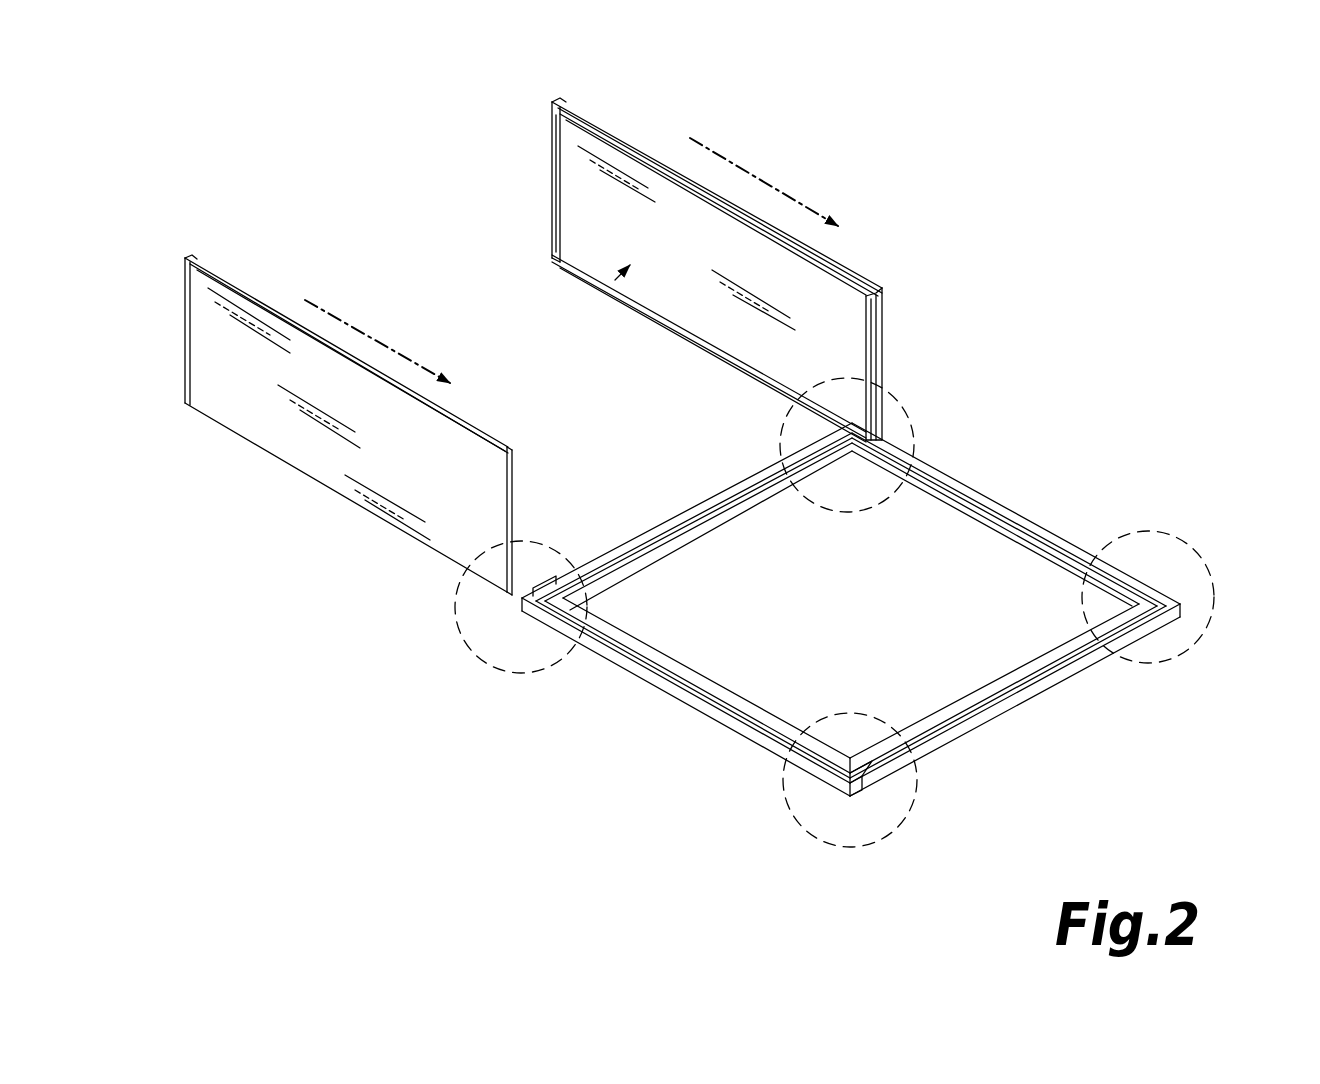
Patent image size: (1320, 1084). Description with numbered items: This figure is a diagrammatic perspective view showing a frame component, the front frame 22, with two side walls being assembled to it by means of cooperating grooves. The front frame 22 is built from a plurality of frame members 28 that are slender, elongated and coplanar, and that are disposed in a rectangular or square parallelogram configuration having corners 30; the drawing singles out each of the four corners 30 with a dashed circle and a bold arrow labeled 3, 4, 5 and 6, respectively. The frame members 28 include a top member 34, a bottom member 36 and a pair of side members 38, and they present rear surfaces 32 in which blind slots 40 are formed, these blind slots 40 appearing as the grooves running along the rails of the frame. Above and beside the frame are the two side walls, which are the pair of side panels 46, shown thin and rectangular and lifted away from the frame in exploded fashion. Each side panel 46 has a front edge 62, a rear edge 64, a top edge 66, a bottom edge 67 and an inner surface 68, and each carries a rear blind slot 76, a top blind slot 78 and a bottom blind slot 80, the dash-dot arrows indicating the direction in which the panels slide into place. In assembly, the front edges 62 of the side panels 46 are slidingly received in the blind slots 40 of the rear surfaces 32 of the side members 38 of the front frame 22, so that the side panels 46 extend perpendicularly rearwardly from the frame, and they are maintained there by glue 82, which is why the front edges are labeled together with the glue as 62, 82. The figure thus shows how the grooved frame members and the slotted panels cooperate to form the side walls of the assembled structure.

The front frame 22 is at (844, 639).
The frame members 28 is at (851, 605).
The corners 30 is at (818, 428).
The rear surfaces 32 is at (693, 501).
The top member 34 is at (737, 481).
The bottom member 36 is at (1060, 675).
The side members 38 is at (1037, 508).
The blind slots 40 is at (640, 533).
The side panels 46 is at (275, 294).
The front edges 62 is at (525, 423).
The rear edges 64 is at (571, 263).
The top edges 66 is at (553, 178).
The bottom edges 67 is at (883, 345).
The inner surfaces 68 is at (688, 300).
The rear blind slot 76 is at (835, 264).
The top blind slot 78 is at (566, 223).
The bottom blind slot 80 is at (863, 348).
The glue 82 is at (668, 327).
The detail view FIG. 3 region 3 is at (461, 644).
The detail view FIG. 4 region 4 is at (780, 793).
The detail view FIG. 5 region 5 is at (1077, 606).
The detail view FIG. 6 region 6 is at (805, 505).